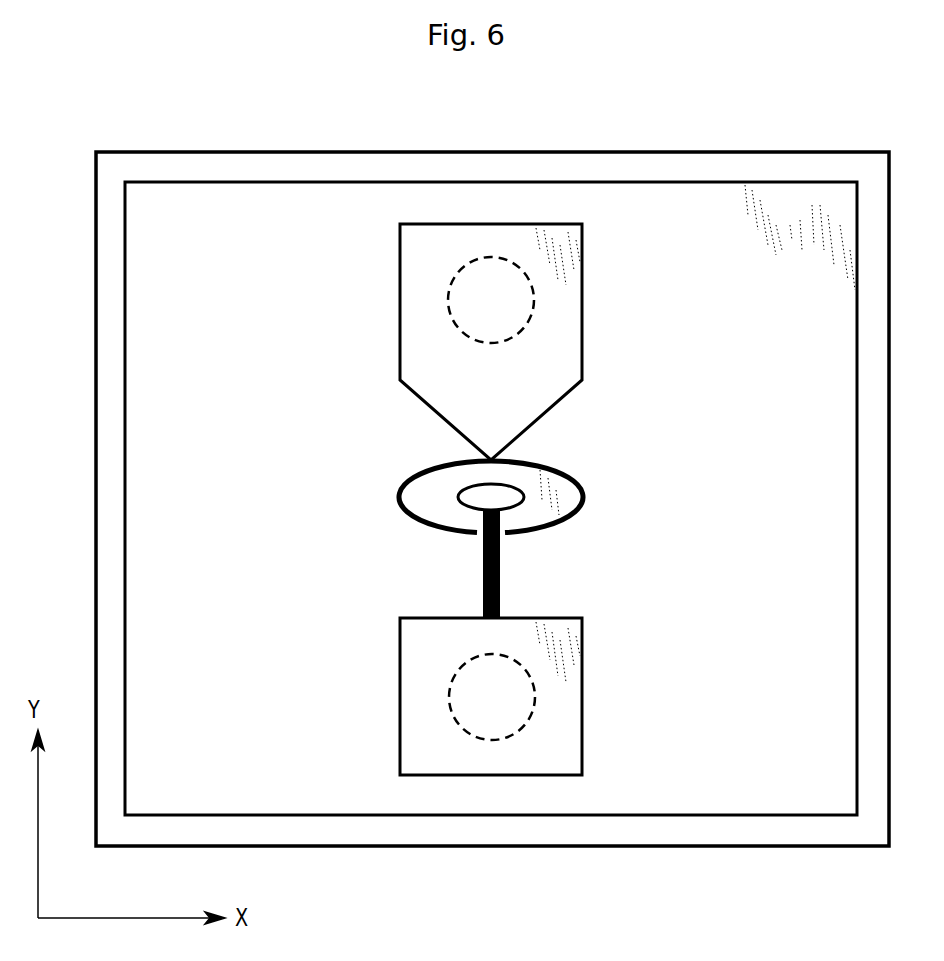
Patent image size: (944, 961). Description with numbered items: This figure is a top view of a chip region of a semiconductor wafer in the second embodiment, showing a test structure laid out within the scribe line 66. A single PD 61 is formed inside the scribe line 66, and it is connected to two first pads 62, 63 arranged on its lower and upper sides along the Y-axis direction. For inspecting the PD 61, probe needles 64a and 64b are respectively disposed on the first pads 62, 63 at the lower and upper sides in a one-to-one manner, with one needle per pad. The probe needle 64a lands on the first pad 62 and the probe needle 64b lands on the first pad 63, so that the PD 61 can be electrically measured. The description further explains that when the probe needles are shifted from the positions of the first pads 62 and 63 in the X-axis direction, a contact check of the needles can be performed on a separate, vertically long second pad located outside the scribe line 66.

The scribe line 66 is at (792, 152).
The first pad 63 is at (583, 302).
The probe needle 64b is at (448, 299).
The PD 61 is at (583, 497).
The first pad 62 is at (583, 702).
The probe needle 64a is at (448, 692).